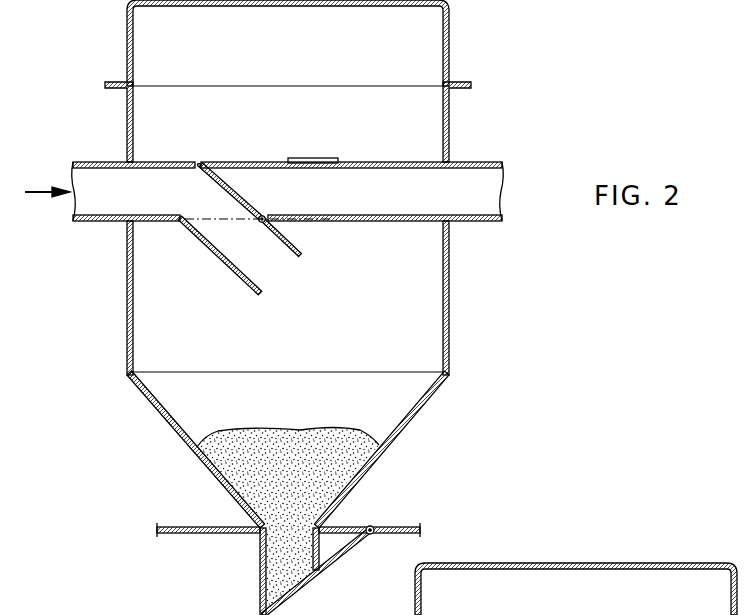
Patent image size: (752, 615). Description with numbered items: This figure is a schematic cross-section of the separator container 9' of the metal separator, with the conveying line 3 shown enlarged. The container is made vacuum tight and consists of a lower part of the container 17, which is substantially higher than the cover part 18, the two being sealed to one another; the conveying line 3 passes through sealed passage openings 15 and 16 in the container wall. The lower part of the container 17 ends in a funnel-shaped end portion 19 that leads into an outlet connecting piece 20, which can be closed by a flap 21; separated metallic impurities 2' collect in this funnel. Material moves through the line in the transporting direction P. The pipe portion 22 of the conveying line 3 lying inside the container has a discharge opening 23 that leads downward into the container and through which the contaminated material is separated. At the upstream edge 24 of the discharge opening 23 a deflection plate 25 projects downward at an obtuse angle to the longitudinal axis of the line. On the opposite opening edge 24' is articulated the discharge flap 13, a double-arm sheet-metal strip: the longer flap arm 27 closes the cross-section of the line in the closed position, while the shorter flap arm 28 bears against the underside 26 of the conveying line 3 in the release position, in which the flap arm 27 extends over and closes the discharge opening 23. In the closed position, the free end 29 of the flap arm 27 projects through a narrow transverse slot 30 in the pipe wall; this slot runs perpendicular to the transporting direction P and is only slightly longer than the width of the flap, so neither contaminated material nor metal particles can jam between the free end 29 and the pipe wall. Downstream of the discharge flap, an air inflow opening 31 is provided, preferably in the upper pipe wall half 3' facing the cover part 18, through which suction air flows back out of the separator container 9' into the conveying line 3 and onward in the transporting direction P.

The metallic impurities 2' is at (288, 449).
The conveying line 3 is at (275, 219).
The upper pipe wall half 3' is at (410, 136).
The separator container 9' is at (485, 27).
The discharge flap 13 is at (300, 243).
The passage opening 15 is at (126, 160).
The passage opening 16 is at (452, 163).
The lower part of the container 17 is at (449, 343).
The cover part 18 is at (127, 34).
The funnel-shaped end portion 19 is at (380, 457).
The outlet connecting piece 20 is at (260, 593).
The flap 21 is at (303, 588).
The pipe portion 22 is at (243, 163).
The discharge opening 23 is at (230, 221).
The upstream edge 24 is at (162, 161).
The opposite opening edge 24' is at (284, 257).
The deflection plate 25 is at (207, 247).
The underside of the conveying line 26 is at (160, 222).
The flap arm 27 is at (242, 197).
The flap arm 28 is at (288, 242).
The free end 29 is at (203, 165).
The transverse slot 30 is at (198, 164).
The air inflow opening 31 is at (320, 160).
The transporting direction P is at (47, 182).